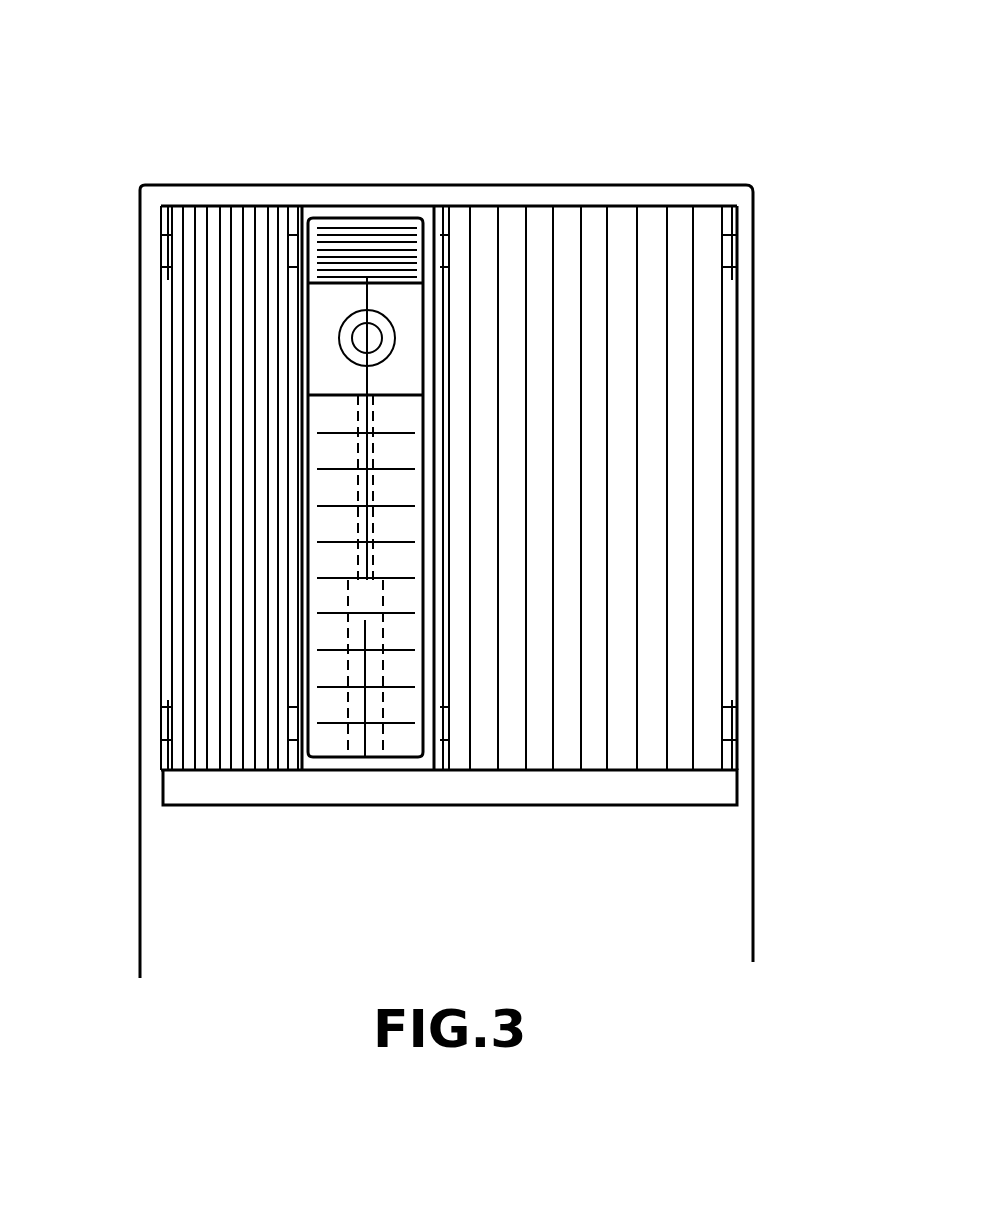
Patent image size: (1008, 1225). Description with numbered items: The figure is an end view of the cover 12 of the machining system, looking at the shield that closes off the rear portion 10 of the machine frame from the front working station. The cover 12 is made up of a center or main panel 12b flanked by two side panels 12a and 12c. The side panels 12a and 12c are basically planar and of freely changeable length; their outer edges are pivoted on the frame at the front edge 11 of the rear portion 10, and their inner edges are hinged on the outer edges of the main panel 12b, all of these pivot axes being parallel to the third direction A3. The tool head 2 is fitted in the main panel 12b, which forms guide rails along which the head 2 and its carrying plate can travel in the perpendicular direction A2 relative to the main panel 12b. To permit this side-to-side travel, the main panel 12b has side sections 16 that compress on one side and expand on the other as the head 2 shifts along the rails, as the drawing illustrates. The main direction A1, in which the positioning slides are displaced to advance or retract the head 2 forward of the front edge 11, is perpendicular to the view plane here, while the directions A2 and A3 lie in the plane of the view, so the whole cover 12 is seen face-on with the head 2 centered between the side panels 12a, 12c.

The tool head 2 is at (330, 380).
The rear portion 10 is at (140, 482).
The front edge 11 is at (160, 525).
The cover 12 is at (232, 806).
The side panel 12a is at (205, 280).
The main panel 12b is at (323, 205).
The side panel 12c is at (692, 300).
The side sections 16 is at (395, 242).
The main direction A1 is at (855, 57).
The perpendicular direction A2 is at (327, 20).
The third direction A3 is at (852, 618).